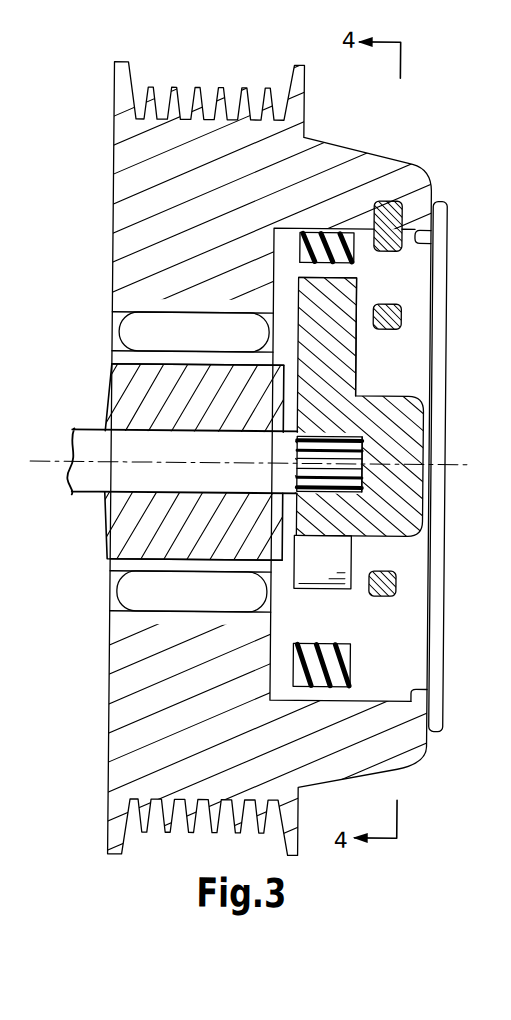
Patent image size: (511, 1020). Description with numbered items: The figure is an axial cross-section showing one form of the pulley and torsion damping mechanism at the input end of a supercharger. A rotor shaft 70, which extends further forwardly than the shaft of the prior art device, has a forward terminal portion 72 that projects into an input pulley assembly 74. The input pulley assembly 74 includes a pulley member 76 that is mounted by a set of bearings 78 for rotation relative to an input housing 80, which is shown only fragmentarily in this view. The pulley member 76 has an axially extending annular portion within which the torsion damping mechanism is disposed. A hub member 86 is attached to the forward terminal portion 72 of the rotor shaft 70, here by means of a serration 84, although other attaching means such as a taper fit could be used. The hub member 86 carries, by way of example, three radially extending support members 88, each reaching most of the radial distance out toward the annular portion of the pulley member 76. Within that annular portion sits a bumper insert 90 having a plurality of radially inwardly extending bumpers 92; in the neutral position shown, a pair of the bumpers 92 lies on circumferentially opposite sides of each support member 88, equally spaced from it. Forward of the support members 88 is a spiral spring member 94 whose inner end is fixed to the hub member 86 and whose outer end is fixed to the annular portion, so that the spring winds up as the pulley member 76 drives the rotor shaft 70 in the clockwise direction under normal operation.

The rotor shaft 70 is at (90, 450).
The forward terminal portion 72 is at (362, 455).
The input pulley assembly 74 is at (441, 758).
The pulley member 76 is at (150, 733).
The bearings 78 is at (143, 595).
The input housing 80 is at (141, 537).
The serration 84 is at (325, 433).
The hub member 86 is at (397, 507).
The support members 88 is at (313, 317).
The bumper insert 90 is at (337, 213).
The bumpers 92 is at (410, 177).
The spiral spring member 94 is at (394, 580).